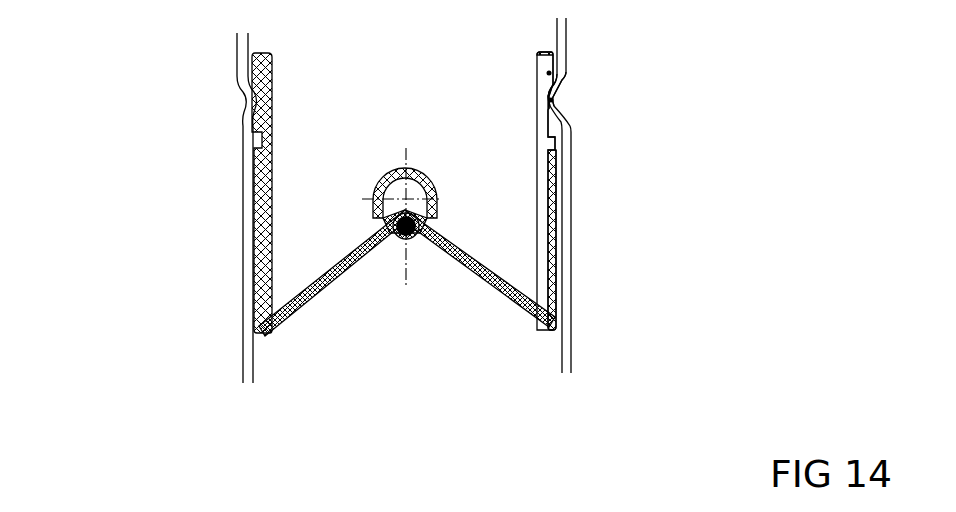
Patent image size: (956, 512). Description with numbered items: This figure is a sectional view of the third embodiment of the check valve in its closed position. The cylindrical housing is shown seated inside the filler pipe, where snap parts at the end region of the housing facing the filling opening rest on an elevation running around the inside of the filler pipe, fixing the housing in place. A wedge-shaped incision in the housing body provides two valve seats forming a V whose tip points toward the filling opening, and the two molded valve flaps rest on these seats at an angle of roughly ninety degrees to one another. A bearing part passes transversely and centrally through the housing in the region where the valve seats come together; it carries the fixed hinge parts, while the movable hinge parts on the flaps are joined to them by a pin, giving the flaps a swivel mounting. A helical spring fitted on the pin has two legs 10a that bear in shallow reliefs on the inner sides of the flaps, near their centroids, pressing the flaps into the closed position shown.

The spring legs 10a is at (447, 257).